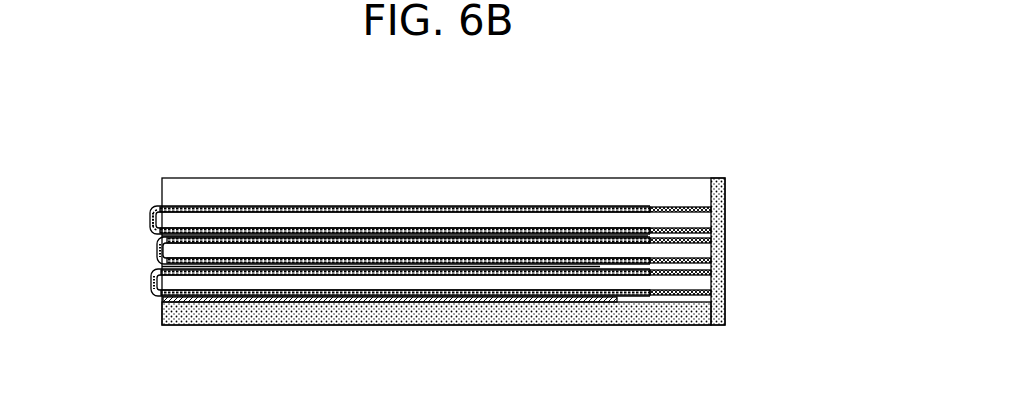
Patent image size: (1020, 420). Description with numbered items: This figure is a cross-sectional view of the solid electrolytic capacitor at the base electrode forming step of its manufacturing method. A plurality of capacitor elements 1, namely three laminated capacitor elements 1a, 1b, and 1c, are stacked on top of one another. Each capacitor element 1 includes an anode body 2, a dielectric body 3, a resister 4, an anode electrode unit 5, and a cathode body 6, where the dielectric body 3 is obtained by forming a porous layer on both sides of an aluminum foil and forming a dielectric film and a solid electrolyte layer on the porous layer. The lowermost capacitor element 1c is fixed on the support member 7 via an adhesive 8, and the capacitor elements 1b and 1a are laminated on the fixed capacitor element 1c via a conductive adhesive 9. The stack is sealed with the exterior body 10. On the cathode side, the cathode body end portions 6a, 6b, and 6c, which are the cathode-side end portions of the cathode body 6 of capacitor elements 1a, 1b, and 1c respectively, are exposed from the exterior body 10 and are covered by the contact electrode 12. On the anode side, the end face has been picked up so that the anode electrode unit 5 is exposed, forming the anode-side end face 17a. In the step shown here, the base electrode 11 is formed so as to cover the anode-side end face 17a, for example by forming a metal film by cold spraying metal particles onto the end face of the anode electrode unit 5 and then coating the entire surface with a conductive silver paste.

The capacitor element 1 is at (394, 229).
The capacitor element 1a is at (236, 222).
The capacitor element 1b is at (273, 250).
The capacitor element 1c is at (210, 283).
The anode body 2 is at (627, 222).
The dielectric body 3 is at (543, 208).
The resister 4 is at (662, 212).
The anode electrode unit 5 is at (695, 220).
The cathode body 6 is at (580, 208).
The cathode body end portion 6a is at (150, 223).
The cathode body end portion 6b is at (156, 252).
The cathode body end portion 6c is at (150, 280).
The support member 7 is at (465, 308).
The adhesive 8 is at (370, 300).
The conductive adhesive 9 is at (338, 272).
The exterior body 10 is at (307, 193).
The base electrode 11 is at (717, 193).
The contact electrode 12 is at (150, 213).
The anode-side end face 17a is at (713, 307).